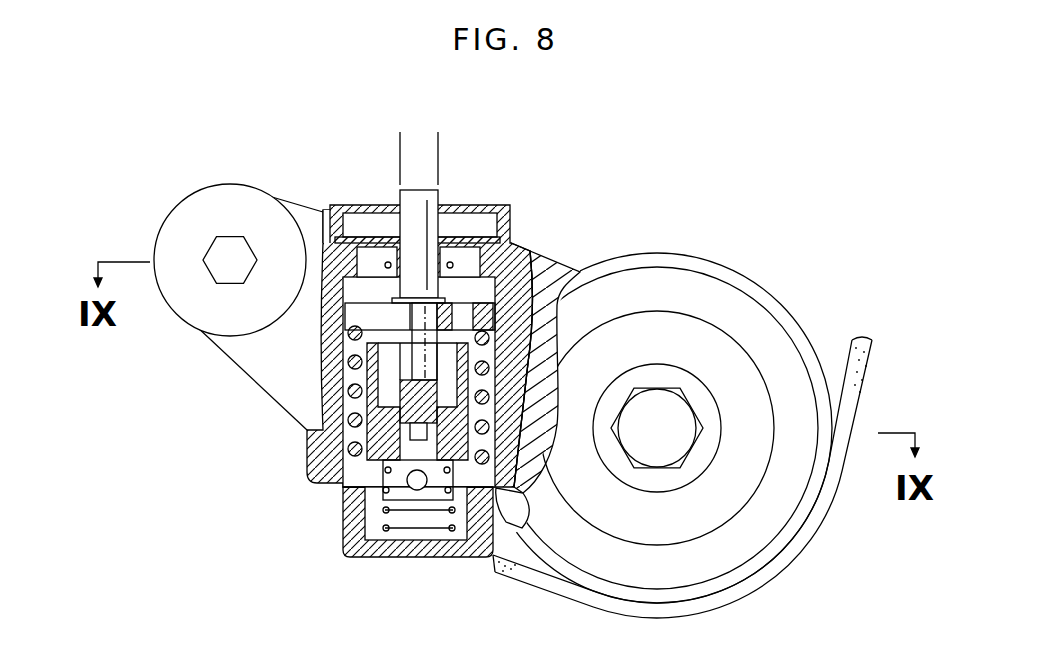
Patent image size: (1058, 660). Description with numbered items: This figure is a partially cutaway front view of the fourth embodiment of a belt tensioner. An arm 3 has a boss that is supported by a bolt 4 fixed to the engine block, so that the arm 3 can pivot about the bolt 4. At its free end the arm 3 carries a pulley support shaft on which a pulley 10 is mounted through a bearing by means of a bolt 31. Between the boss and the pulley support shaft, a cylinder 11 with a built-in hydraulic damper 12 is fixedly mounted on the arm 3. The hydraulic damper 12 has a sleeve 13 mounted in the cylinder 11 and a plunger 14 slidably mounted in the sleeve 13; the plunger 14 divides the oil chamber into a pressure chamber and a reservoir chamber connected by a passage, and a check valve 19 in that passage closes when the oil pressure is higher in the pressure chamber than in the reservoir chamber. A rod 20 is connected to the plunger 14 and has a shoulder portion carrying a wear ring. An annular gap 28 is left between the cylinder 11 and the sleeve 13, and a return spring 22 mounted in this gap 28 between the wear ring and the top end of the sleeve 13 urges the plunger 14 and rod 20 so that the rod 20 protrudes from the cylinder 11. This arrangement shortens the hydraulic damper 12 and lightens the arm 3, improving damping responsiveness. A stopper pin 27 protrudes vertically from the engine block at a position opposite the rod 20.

The arm 3 is at (305, 215).
The bolt 4 is at (190, 215).
The pulley 10 is at (790, 313).
The cylinder 11 is at (506, 272).
The hydraulic damper 12 is at (586, 268).
The sleeve 13 is at (350, 453).
The plunger 14 is at (446, 455).
The check valve 19 is at (400, 487).
The rod 20 is at (410, 208).
The return spring 22 is at (352, 360).
The stopper pin 27 is at (425, 162).
The annular gap 28 is at (350, 405).
The bolt 31 is at (652, 410).